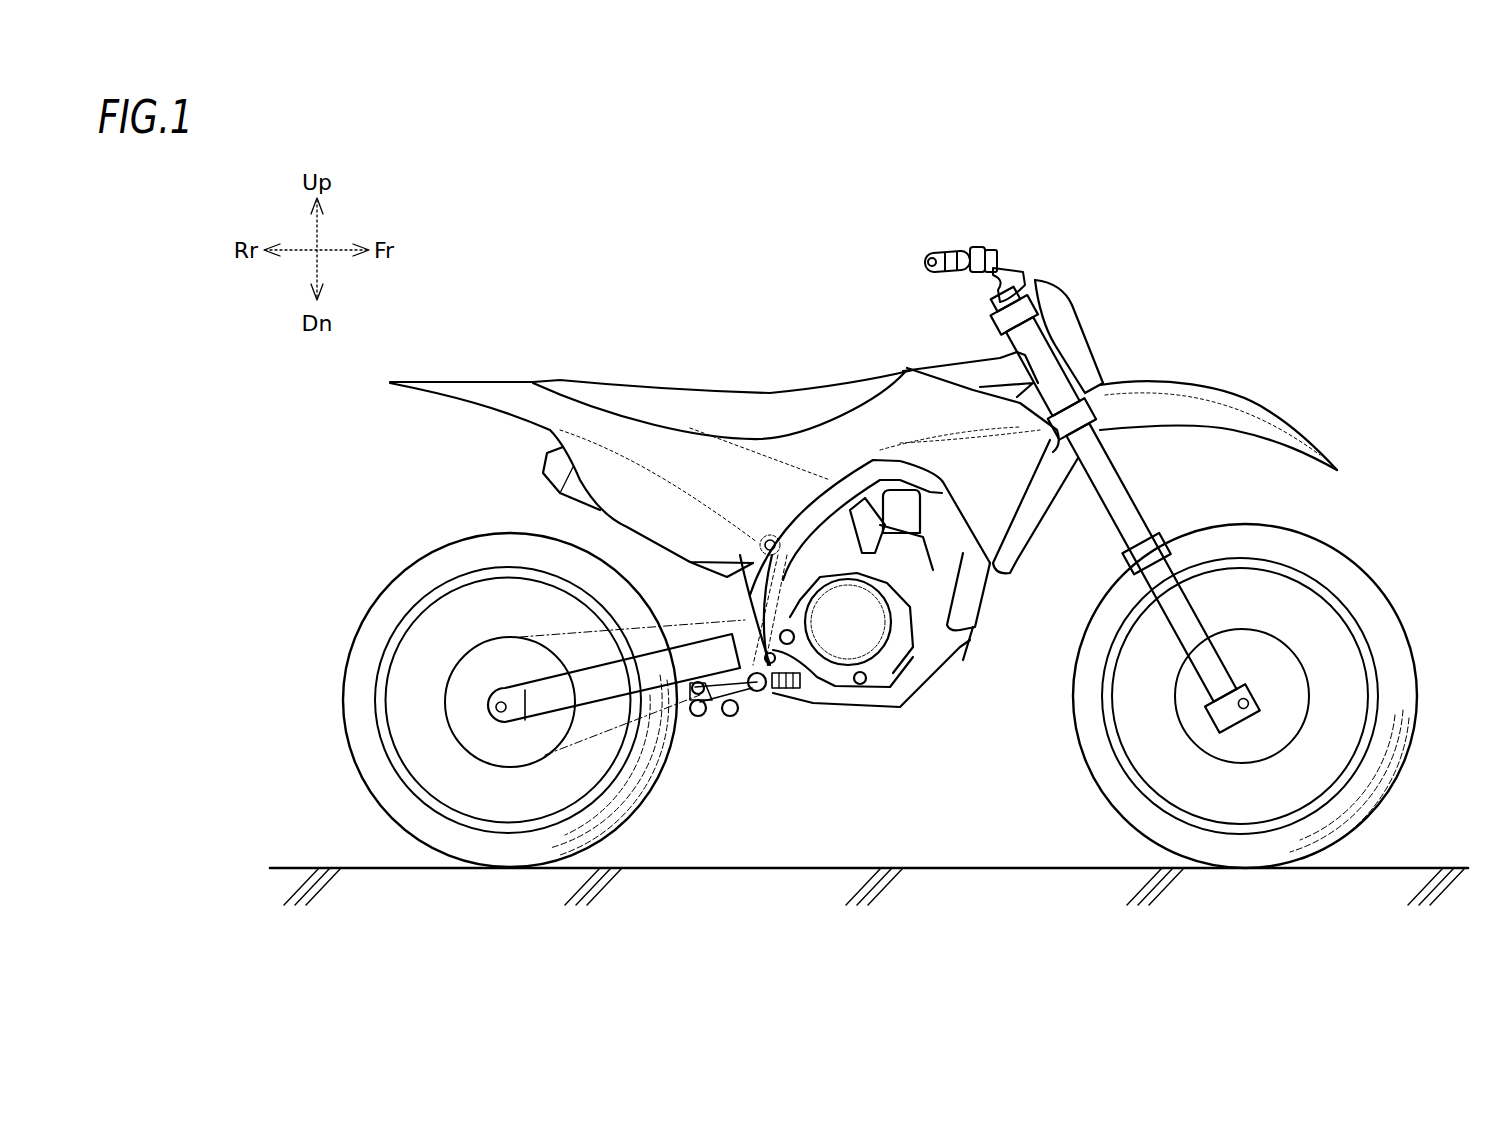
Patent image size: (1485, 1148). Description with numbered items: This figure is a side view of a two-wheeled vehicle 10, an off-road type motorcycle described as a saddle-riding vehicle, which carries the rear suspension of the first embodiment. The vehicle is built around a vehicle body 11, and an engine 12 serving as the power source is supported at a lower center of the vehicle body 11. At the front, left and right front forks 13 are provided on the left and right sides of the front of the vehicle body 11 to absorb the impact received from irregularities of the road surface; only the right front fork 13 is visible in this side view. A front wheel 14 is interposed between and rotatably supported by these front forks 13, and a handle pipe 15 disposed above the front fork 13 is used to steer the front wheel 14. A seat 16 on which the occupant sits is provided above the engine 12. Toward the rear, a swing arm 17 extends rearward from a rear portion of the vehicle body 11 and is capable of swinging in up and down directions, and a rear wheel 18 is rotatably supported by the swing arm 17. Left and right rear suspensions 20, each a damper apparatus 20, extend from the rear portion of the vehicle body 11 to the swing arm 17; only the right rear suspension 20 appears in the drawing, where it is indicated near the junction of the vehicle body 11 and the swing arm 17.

The two-wheeled vehicle 10 is at (1291, 270).
The vehicle body 11 is at (972, 588).
The engine 12 is at (857, 633).
The front fork 13 is at (1190, 632).
The front wheel 14 is at (1400, 630).
The handle pipe 15 is at (985, 247).
The seat 16 is at (727, 392).
The swing arm 17 is at (655, 670).
The rear wheel 18 is at (405, 573).
The rear suspension 20 is at (763, 527).